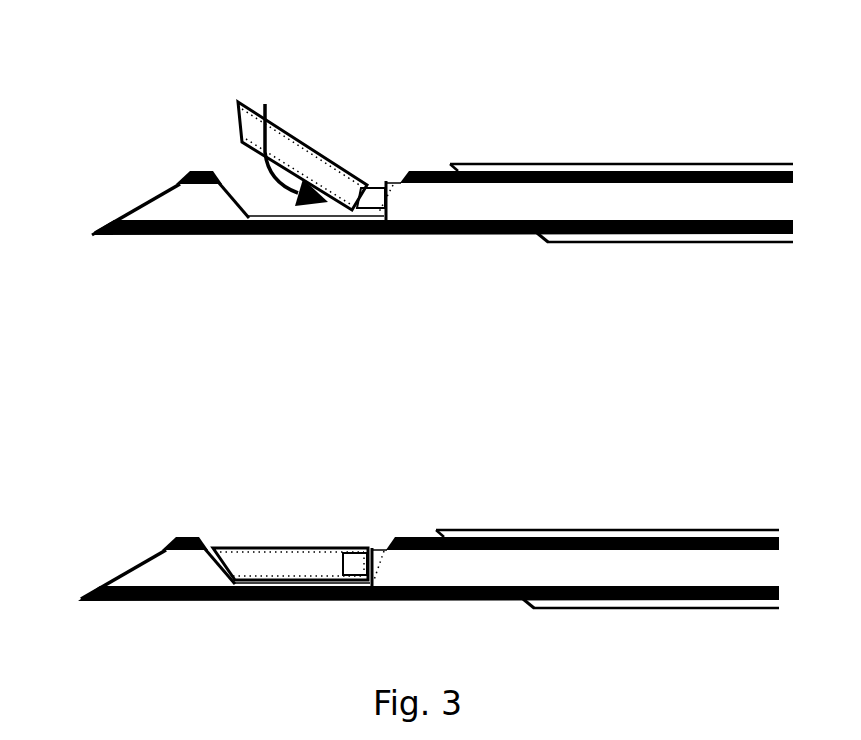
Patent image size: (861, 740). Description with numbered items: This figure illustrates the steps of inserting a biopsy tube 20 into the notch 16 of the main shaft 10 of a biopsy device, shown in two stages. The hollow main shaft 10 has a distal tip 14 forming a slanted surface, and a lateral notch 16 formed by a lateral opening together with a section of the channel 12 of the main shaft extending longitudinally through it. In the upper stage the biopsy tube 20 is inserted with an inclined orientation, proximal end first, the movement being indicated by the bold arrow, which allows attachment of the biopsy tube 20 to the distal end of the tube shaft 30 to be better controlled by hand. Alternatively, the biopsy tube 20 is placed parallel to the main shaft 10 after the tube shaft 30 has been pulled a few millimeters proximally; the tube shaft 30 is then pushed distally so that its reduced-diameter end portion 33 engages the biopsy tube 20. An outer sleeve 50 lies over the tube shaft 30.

The main shaft 10 is at (262, 237).
The channel of main shaft 12 is at (167, 199).
The distal tip 14 is at (100, 224).
The notch 16 is at (251, 187).
The biopsy tube 20 is at (297, 145).
The tube shaft 30 is at (610, 197).
The end portion 33 is at (378, 193).
The outer sleeve 50 is at (566, 160).